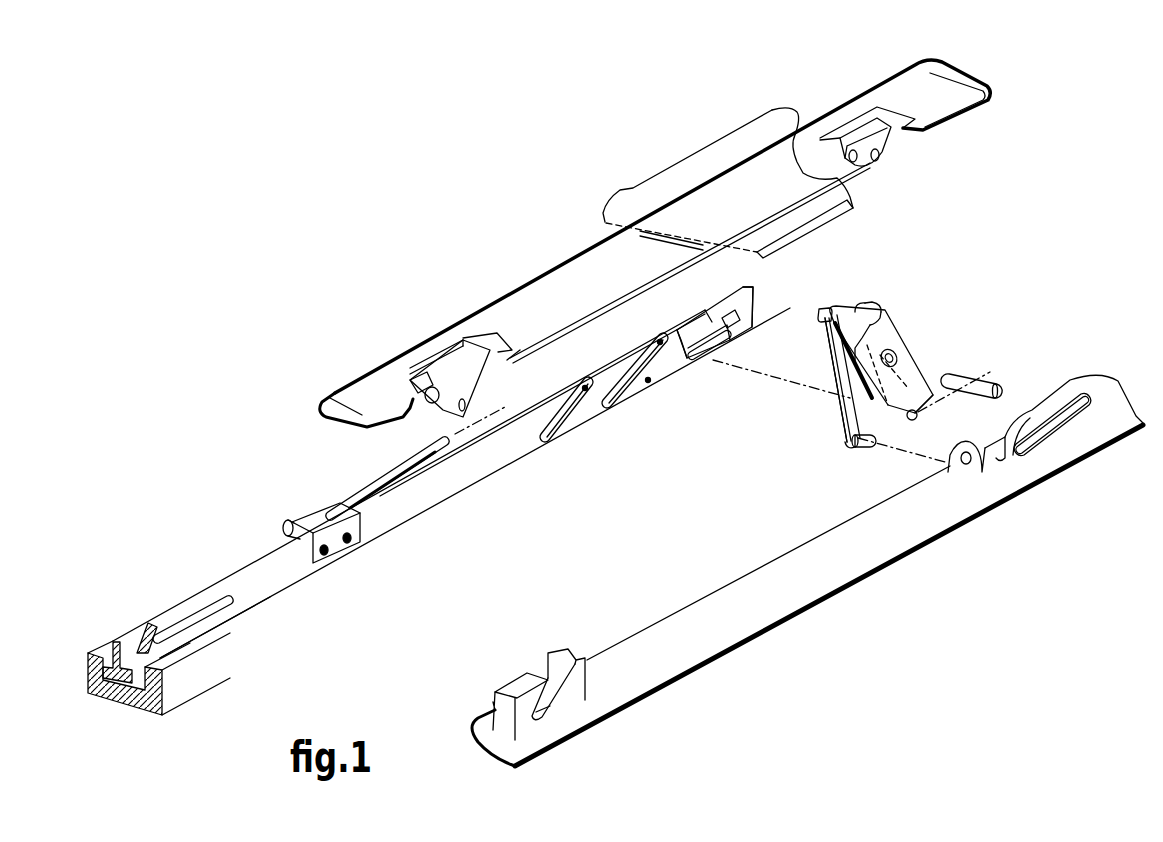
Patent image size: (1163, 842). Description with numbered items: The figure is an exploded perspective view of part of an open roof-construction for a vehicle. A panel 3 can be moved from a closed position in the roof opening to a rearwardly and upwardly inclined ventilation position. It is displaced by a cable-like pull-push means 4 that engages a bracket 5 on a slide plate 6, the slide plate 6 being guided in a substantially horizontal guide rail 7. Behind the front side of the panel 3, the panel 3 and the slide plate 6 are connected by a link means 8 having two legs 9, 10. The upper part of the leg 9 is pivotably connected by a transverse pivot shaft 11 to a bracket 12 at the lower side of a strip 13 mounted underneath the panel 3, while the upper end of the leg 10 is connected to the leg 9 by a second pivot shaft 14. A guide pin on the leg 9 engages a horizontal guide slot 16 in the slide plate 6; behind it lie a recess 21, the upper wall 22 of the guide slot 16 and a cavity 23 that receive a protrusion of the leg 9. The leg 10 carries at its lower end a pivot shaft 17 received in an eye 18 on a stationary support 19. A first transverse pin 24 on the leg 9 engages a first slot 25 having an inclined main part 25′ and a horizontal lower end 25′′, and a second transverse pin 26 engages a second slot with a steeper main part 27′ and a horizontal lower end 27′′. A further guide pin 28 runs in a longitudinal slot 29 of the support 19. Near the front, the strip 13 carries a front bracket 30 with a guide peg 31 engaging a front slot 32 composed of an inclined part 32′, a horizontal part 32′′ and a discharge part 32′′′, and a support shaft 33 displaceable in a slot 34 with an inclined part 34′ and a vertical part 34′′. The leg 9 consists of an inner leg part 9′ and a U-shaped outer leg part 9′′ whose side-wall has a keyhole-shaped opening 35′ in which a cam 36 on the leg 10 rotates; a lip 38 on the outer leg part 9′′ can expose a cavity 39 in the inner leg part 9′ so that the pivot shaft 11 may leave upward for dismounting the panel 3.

The panel 3 is at (658, 190).
The cable-like pull-push means 4 is at (460, 440).
The bracket 5 is at (318, 522).
The slide plate 6 is at (432, 493).
The guide rail 7 is at (151, 703).
The link means 8 is at (850, 378).
The leg 9 is at (868, 302).
The inner leg part 9′ is at (879, 253).
The outer leg part 9′′ is at (920, 395).
The leg 10 is at (863, 421).
The pivot shaft 11 is at (858, 160).
The bracket 12 is at (888, 141).
The strip 13 is at (945, 110).
The pivot shaft 14 is at (970, 383).
The guide slot 16 is at (722, 344).
The pivot shaft 17 is at (850, 444).
The eye 18 is at (968, 475).
The stationary support 19 is at (770, 606).
The recess 21 is at (752, 300).
The upper wall 22 is at (728, 318).
The cavity 23 is at (712, 318).
The first transverse pin 24 is at (836, 362).
The first slot 25 is at (648, 382).
The main part 25′ is at (657, 367).
The lower end 25′′ is at (608, 405).
The second transverse pin 26 is at (822, 308).
The main part 27′ is at (592, 408).
The lower end 27′′ is at (571, 418).
The further guide pin 28 is at (911, 420).
The longitudinal slot 29 is at (1053, 423).
The front bracket 30 is at (447, 367).
The guide peg 31 is at (410, 395).
The front slot 32 is at (204, 635).
The inclined part 32′ is at (205, 612).
The horizontal slot part 32′′ is at (150, 625).
The discharge part 32′′′ is at (118, 643).
The support shaft 33 is at (412, 378).
The slot 34 is at (520, 682).
The inclined part 34′ is at (545, 676).
The vertical slot part 34′′ is at (532, 716).
The keyhole-shaped opening 35′ is at (890, 349).
The cam 36 is at (900, 366).
The lip 38 is at (880, 318).
The cavity 39 is at (881, 305).